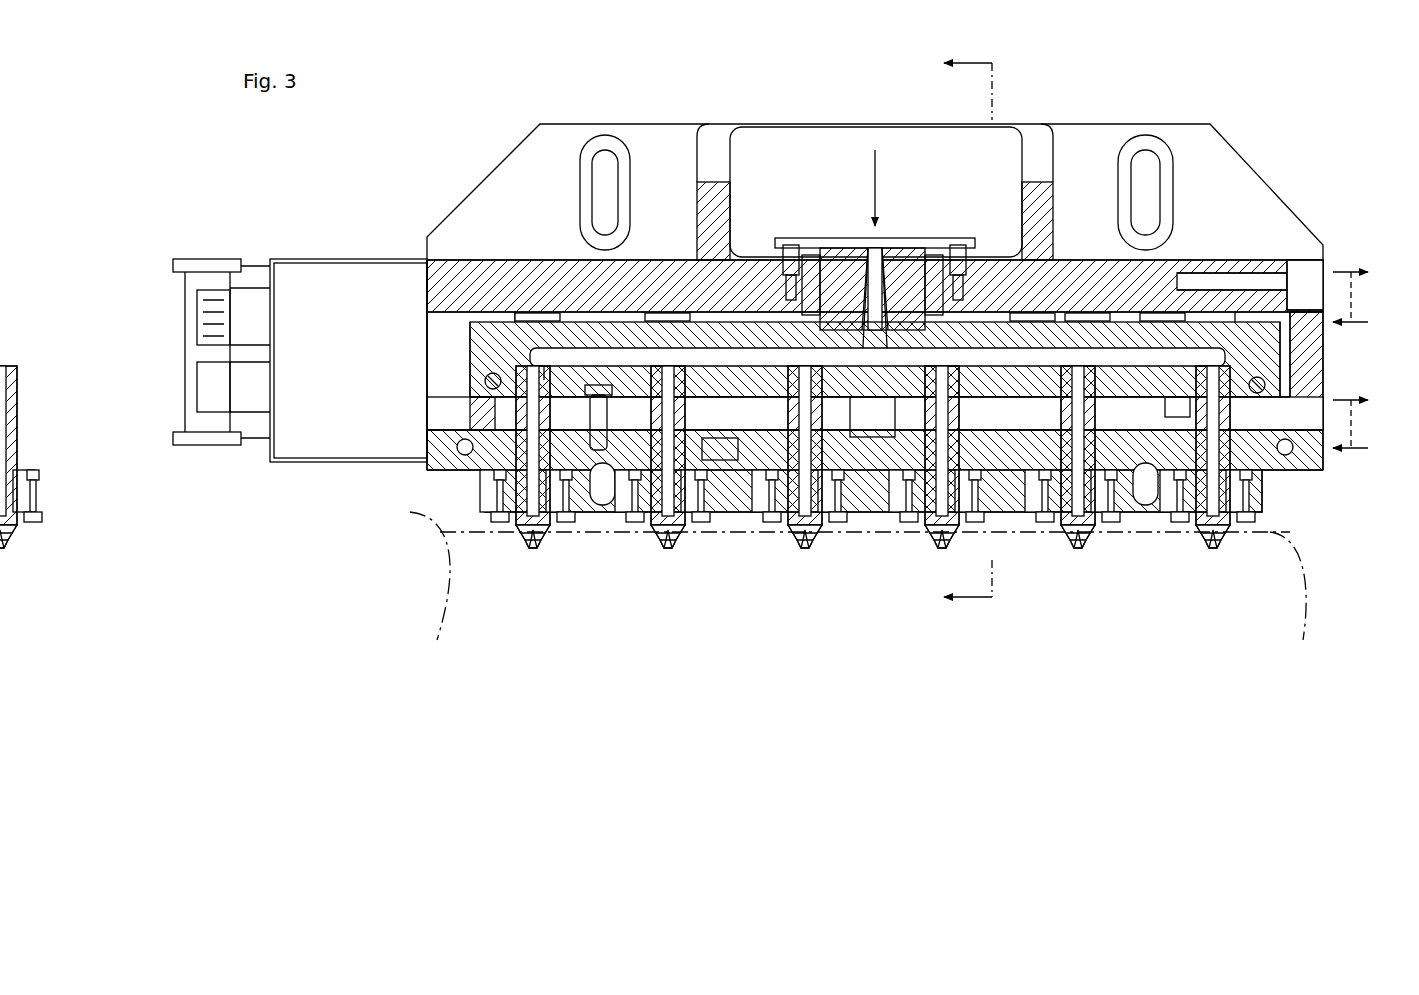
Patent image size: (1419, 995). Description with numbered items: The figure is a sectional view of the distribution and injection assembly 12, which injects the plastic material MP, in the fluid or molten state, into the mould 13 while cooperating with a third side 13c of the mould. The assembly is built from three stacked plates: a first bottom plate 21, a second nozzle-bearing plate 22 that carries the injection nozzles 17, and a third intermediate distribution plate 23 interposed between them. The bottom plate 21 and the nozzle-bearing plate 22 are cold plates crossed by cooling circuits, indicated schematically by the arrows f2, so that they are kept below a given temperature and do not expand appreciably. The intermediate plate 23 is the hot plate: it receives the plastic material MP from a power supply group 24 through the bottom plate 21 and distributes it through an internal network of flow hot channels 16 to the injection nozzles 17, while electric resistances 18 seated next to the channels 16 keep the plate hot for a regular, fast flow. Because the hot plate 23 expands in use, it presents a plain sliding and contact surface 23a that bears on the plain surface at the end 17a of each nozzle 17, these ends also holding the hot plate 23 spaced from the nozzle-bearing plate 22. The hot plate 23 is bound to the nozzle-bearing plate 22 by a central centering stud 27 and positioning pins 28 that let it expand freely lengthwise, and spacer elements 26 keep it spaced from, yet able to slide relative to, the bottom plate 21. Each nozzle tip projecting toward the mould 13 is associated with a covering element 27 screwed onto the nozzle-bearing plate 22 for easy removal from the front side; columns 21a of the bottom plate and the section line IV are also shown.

The distribution and injection assembly 12 is at (1048, 590).
The mould 13 is at (463, 623).
The third side of the mould 13c is at (1295, 507).
The flow hot channels 16 is at (600, 356).
The injection nozzles 17 is at (524, 540).
The end of the injection nozzle 17a is at (480, 405).
The electric resistances 18 is at (485, 381).
The bottom plate 21 is at (485, 272).
The support column 21a is at (697, 195).
The nozzle-bearing plate 22 is at (455, 463).
The intermediate distribution plate 23 is at (485, 340).
The sliding and contact surface 23a is at (584, 500).
The power supply group 24 is at (926, 232).
The spacer elements 26 is at (530, 318).
The central centering stud 27 is at (541, 547).
The positioning pins 28 is at (611, 506).
The plastic material MP is at (878, 172).
The cooling circuits f2 is at (1350, 360).
The section line IV is at (968, 331).